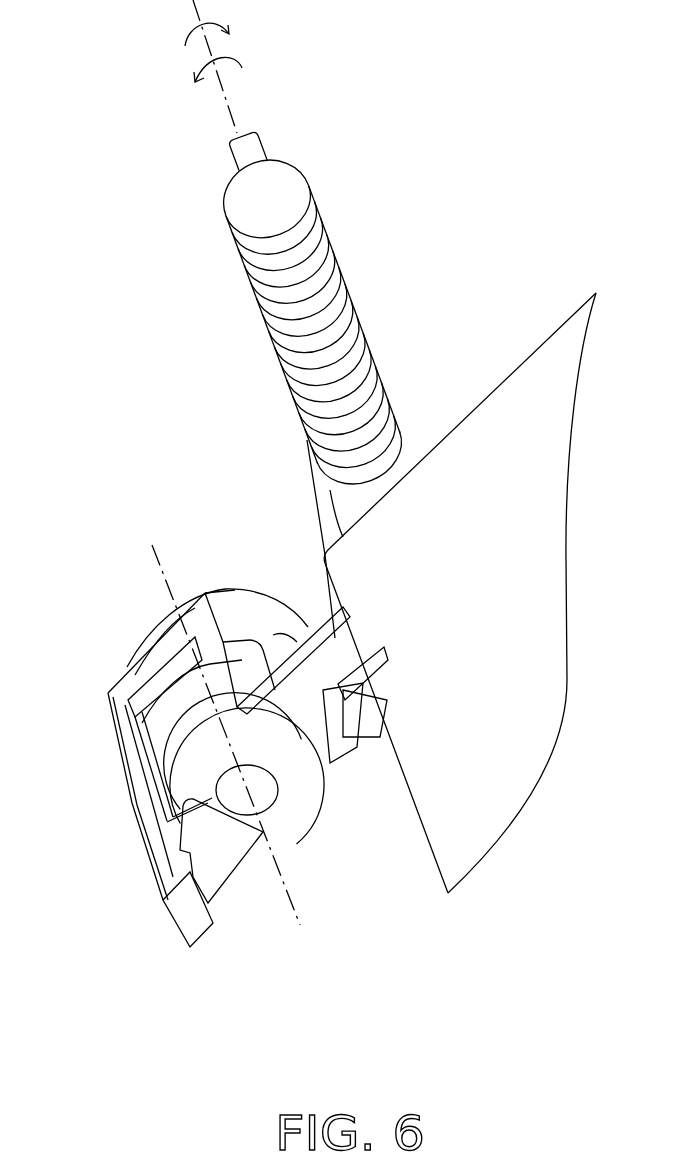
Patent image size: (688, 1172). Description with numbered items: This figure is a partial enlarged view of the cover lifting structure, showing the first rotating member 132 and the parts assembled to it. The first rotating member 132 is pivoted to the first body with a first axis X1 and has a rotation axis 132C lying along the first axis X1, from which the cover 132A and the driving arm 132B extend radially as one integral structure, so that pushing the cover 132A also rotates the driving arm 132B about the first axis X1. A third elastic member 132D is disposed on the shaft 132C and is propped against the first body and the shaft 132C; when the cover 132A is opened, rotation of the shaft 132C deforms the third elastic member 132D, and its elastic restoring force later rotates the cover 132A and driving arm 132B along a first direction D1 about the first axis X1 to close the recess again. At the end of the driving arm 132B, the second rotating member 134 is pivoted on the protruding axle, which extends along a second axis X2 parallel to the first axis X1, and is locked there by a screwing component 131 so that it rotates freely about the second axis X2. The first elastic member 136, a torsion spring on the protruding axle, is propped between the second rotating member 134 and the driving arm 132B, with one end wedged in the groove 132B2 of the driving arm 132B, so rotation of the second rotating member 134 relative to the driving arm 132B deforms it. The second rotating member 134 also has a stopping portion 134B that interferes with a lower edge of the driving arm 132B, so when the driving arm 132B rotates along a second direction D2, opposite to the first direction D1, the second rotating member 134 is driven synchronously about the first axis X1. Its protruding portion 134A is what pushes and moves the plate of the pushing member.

The screwing component 131 is at (143, 640).
The first rotating member 132 is at (399, 473).
The cover 132A is at (518, 377).
The driving arm 132B is at (307, 440).
The groove 132B2 is at (352, 673).
The rotation axis 132C is at (390, 477).
The third elastic member 132D is at (310, 267).
The second rotating member 134 is at (112, 689).
The protruding portion 134A is at (223, 846).
The stopping portion 134B is at (337, 740).
The first elastic member 136 is at (118, 700).
The first axis X1 is at (232, 107).
The second axis X2 is at (167, 568).
The first direction D1 is at (192, 30).
The second direction D2 is at (236, 75).